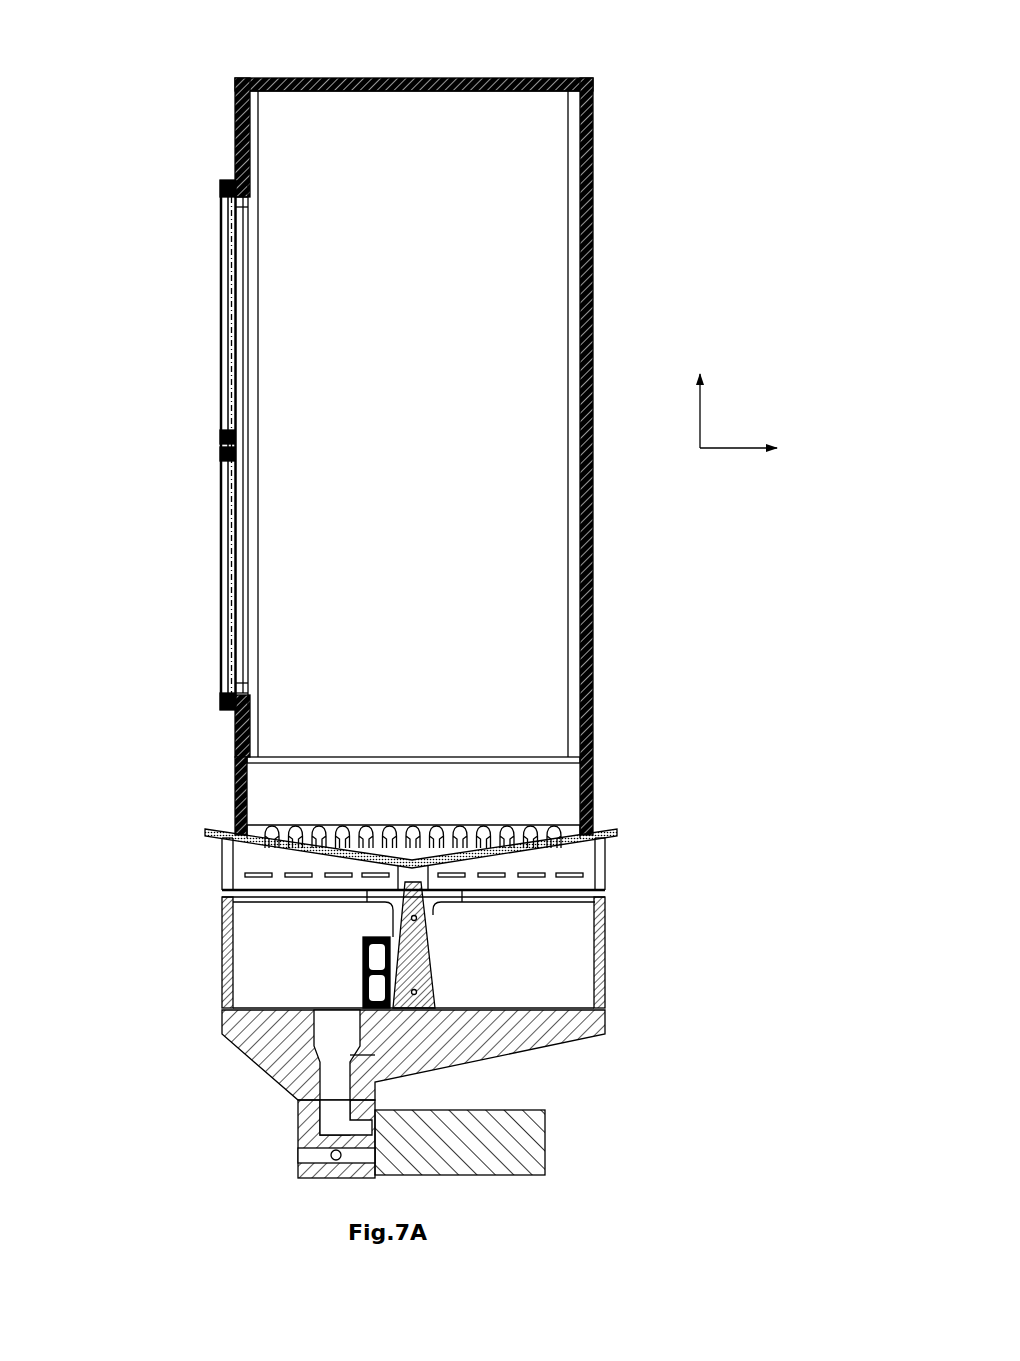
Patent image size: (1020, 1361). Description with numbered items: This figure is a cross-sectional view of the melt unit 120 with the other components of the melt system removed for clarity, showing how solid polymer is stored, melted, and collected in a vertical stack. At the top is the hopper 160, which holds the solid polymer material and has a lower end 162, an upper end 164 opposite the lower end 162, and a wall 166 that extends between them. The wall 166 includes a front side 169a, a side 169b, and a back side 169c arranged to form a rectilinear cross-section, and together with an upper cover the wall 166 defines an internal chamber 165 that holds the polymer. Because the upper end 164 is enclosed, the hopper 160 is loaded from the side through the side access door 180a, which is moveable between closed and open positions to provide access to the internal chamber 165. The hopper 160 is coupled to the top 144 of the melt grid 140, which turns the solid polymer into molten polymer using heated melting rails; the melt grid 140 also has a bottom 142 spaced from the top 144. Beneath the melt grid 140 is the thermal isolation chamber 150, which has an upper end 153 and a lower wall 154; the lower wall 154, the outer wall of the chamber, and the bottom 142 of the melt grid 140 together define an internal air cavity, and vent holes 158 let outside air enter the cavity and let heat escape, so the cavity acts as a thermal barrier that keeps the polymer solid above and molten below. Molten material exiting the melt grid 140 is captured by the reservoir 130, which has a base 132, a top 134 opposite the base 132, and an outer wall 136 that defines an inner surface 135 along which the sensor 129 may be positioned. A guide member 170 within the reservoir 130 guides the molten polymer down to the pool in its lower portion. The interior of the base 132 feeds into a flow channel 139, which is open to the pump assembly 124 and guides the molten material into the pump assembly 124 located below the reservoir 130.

The melt unit 120 is at (137, 140).
The hopper 160 is at (348, 78).
The upper end 164 is at (560, 74).
The internal chamber 165 is at (500, 203).
The wall 166 is at (593, 262).
The side 169a is at (250, 163).
The side 169b is at (578, 308).
The side 169c is at (370, 350).
The side access door 180a is at (220, 222).
The top 144 is at (236, 750).
The lower end 162 is at (603, 740).
The melt grid 140 is at (225, 790).
The upper end 153 is at (600, 830).
The vent holes 158 is at (485, 850).
The bottom 142 is at (258, 856).
The thermal isolation chamber 150 is at (207, 877).
The top 134 is at (603, 887).
The reservoir 130 is at (215, 960).
The outer wall 136 is at (225, 928).
The lower wall 154 is at (603, 932).
The inner surface 135 is at (594, 940).
The sensor 129 is at (365, 960).
The guide member 170 is at (432, 965).
The base 132 is at (513, 1052).
The flow channel 139 is at (332, 1107).
The pump assembly 124 is at (277, 1152).